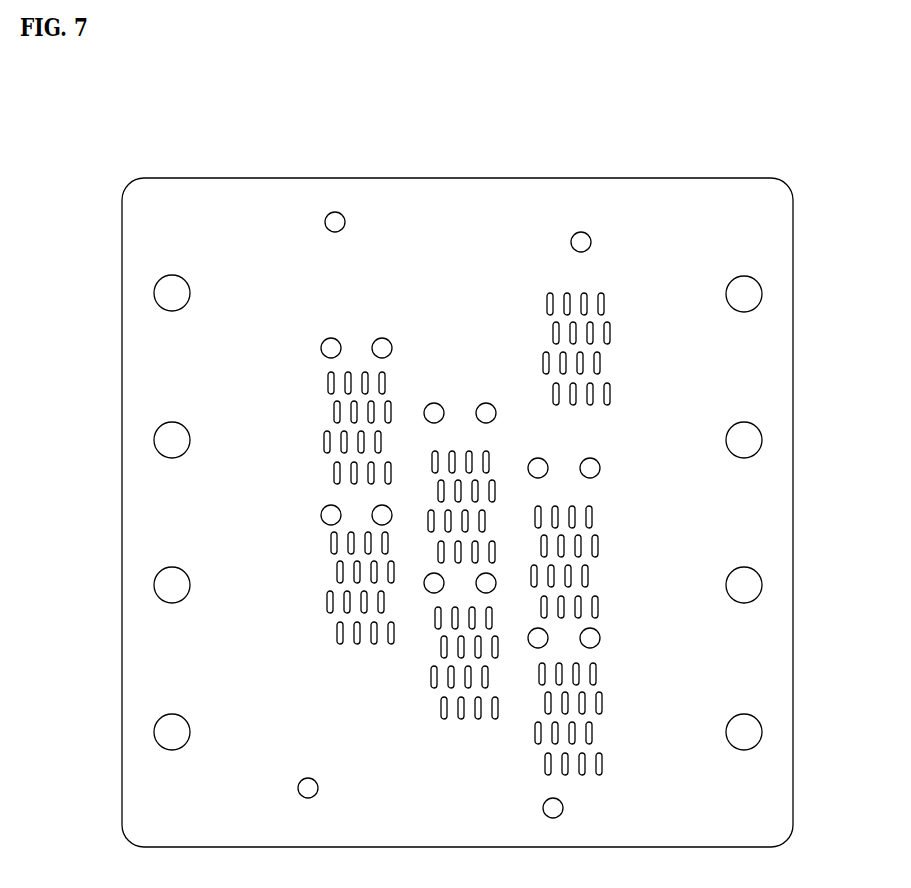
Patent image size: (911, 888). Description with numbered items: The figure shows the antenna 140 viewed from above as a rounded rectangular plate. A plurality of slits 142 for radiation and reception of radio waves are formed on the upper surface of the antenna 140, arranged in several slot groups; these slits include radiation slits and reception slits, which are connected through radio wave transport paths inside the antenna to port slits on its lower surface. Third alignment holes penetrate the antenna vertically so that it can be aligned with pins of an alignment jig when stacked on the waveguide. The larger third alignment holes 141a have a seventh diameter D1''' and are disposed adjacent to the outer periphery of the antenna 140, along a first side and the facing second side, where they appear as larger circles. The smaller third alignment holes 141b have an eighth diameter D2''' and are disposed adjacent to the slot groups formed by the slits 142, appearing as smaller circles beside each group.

The antenna 140 is at (217, 178).
The (3-1)-th alignment holes 141a is at (762, 437).
The (3-2)-th alignment holes 141b is at (335, 212).
The slits 142 is at (327, 383).
The seventh diameter D1''' is at (820, 294).
The eighth diameter D2''' is at (583, 160).